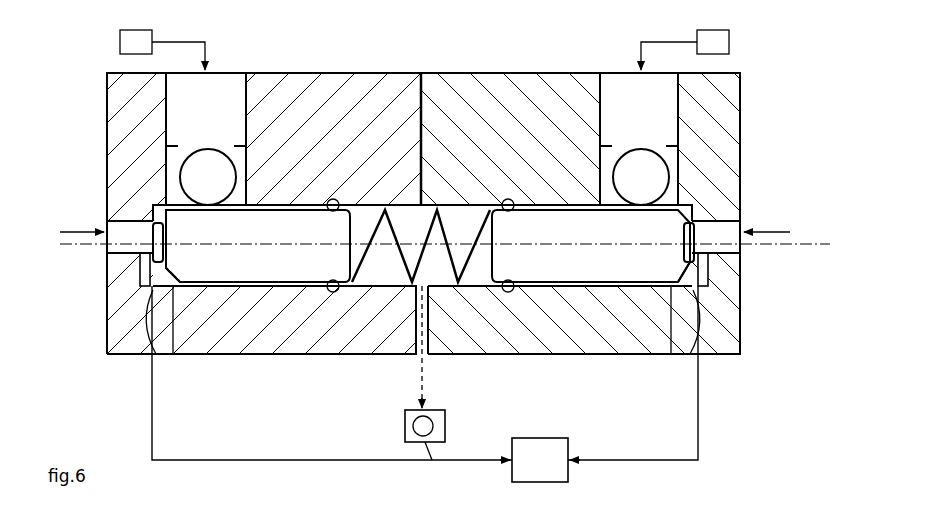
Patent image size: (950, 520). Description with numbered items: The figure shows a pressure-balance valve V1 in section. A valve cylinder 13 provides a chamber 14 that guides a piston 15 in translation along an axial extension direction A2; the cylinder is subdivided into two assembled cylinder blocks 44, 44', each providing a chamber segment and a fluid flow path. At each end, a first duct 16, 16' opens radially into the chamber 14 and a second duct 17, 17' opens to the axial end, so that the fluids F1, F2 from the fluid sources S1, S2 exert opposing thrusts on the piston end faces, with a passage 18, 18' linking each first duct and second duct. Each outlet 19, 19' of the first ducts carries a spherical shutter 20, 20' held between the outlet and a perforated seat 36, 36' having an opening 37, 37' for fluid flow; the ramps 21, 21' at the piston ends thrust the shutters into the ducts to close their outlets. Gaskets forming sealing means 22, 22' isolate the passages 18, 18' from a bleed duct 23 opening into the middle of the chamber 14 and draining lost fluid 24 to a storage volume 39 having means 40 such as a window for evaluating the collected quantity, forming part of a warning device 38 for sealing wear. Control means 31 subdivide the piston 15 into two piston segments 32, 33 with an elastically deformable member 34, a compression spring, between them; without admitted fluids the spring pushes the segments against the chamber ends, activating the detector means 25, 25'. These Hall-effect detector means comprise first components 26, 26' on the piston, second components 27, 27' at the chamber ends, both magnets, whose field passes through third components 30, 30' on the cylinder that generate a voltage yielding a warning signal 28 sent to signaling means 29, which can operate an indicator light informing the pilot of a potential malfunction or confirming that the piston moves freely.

The valve cylinder 13 is at (490, 73).
The chamber 14 is at (603, 355).
The piston 15 is at (285, 302).
The first duct 16 is at (206, 139).
The first duct 16' is at (639, 139).
The second duct 17 is at (112, 199).
The second duct 17' is at (748, 207).
The passage 18 is at (191, 337).
The passage 18' is at (651, 340).
The outlet 19 is at (208, 160).
The outlet 19' is at (643, 172).
The shutter 20 is at (208, 177).
The shutter 20' is at (641, 177).
The ramp 21 is at (206, 239).
The ramp 21' is at (642, 238).
The sealing means 22 is at (313, 208).
The sealing means 22' is at (539, 208).
The bleed duct 23 is at (455, 355).
The lost fluid 24 is at (407, 347).
The detector means 25 is at (79, 326).
The detector means 25' is at (764, 323).
The first component 26 is at (192, 267).
The first component 26' is at (650, 268).
The second component 27 is at (96, 276).
The second component 27' is at (751, 271).
The warning signal 28 is at (425, 373).
The signaling means 29 is at (540, 460).
The third component 30 is at (128, 354).
The third component 30' is at (716, 346).
The control means 31 is at (455, 215).
The piston segment 32 is at (258, 246).
The piston segment 33 is at (591, 246).
The elastically deformable member 34 is at (392, 272).
The perforated seat 36 is at (179, 117).
The perforated seat 36' is at (614, 117).
The opening 37 is at (256, 119).
The opening 37' is at (694, 114).
The warning device 38 is at (448, 420).
The storage volume 39 is at (410, 428).
The means for evaluating the quantity of lost fluid 40 is at (432, 452).
The pressure-balance valve cylinder block 44 is at (342, 187).
The pressure-balance valve cylinder block 44' is at (545, 187).
The axial extension direction A2 is at (460, 244).
The fluid F1 is at (767, 221).
The fluid F2 is at (82, 221).
The fluid source S1 is at (685, 44).
The fluid source S2 is at (162, 44).
The pressure-balance valve V1 is at (757, 95).